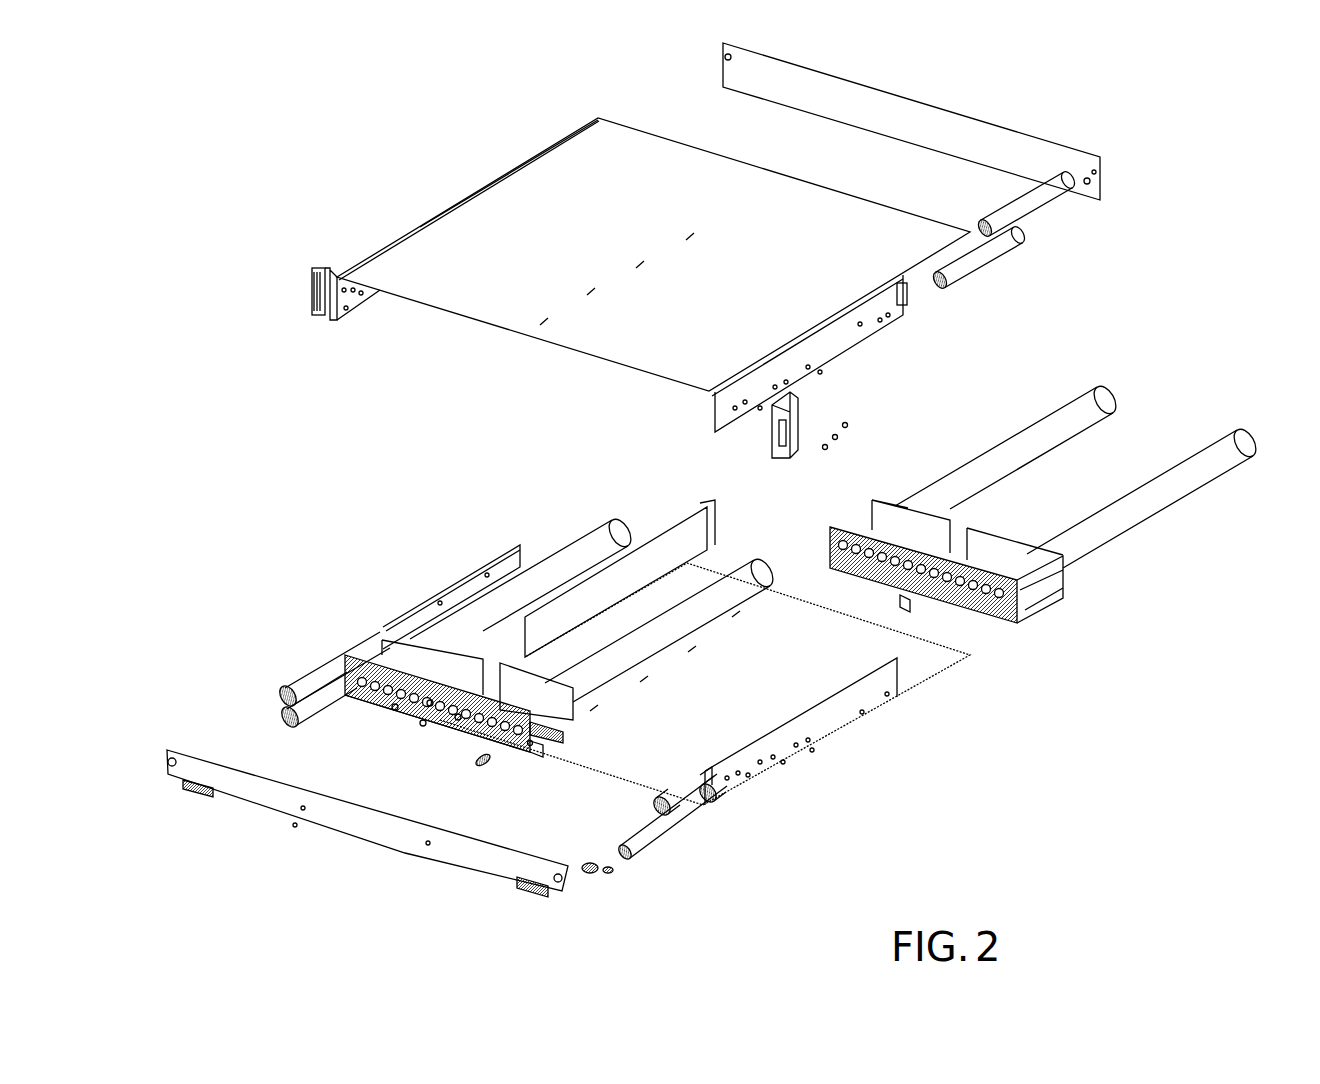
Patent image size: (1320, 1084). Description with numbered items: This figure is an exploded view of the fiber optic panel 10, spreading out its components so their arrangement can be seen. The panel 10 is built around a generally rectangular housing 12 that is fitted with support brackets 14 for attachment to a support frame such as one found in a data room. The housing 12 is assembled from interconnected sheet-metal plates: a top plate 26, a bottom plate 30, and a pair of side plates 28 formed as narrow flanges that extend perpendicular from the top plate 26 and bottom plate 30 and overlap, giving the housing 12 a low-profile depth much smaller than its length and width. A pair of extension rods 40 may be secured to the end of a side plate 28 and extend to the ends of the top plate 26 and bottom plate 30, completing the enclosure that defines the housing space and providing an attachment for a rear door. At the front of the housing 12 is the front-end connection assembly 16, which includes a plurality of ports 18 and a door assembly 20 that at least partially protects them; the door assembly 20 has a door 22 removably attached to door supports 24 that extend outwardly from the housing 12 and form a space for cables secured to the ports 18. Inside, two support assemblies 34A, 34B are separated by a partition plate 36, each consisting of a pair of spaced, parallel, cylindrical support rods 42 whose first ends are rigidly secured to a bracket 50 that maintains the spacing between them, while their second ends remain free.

The fiber optic panel 10 is at (226, 151).
The housing 12 is at (452, 587).
The support brackets 14 is at (312, 298).
The front-end connection assembly 16 is at (225, 730).
The ports 18 is at (458, 717).
The door assembly 20 is at (645, 868).
The door 22 is at (443, 853).
The door supports 24 is at (313, 683).
The top plate 26 is at (525, 197).
The side plates 28 is at (865, 318).
The bottom plate 30 is at (917, 653).
The support assembly 34A is at (577, 530).
The support assembly 34B is at (1187, 410).
The partition plate 36 is at (693, 532).
The extension rods 40 is at (1030, 200).
The support rods 42 is at (620, 527).
The bracket 50 is at (413, 655).